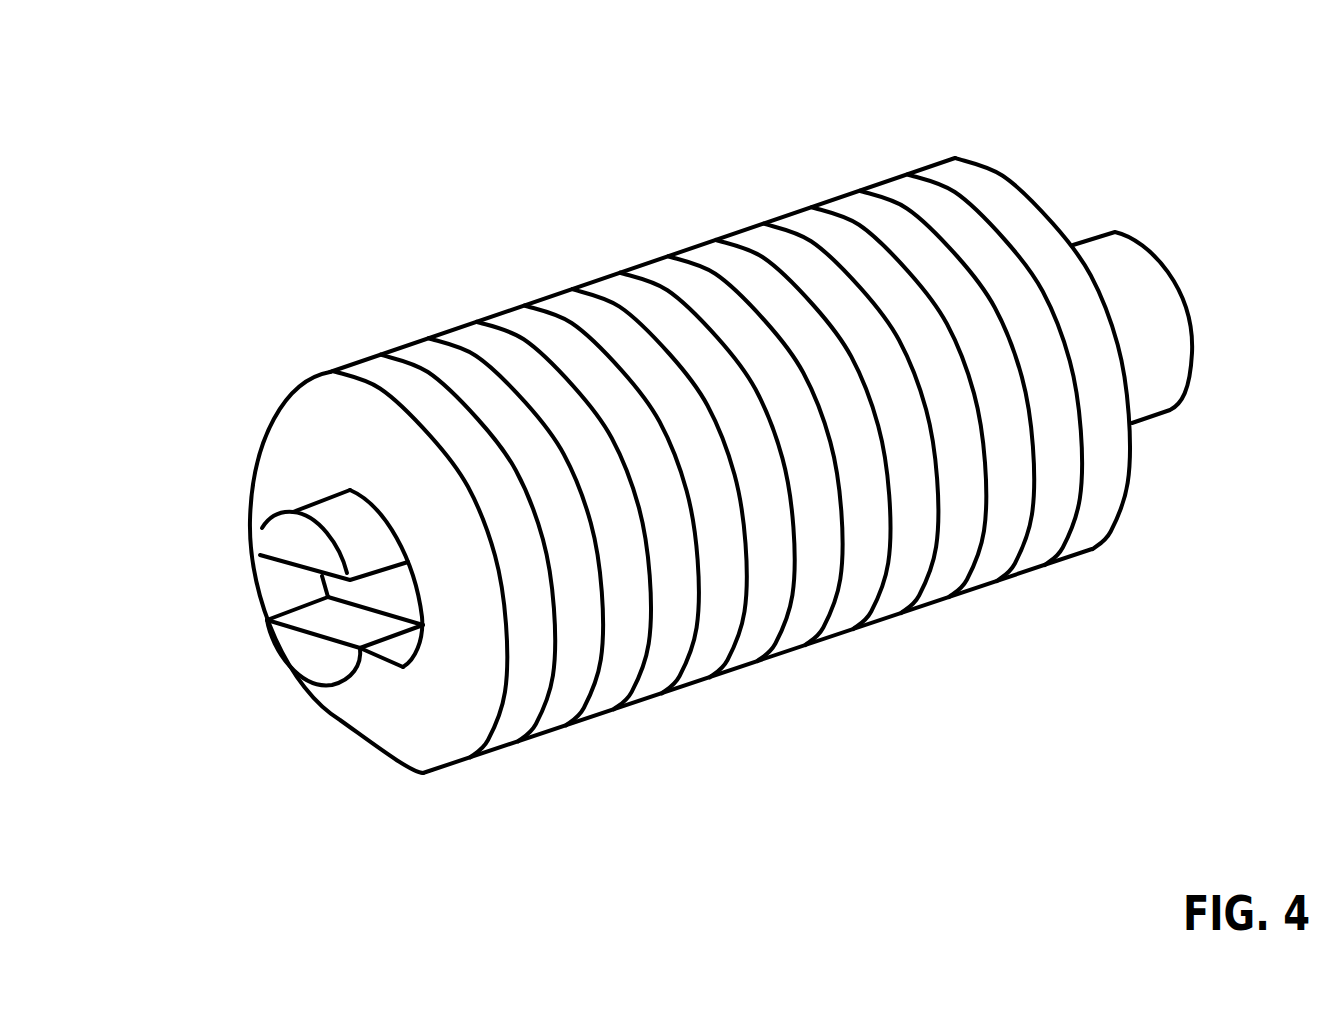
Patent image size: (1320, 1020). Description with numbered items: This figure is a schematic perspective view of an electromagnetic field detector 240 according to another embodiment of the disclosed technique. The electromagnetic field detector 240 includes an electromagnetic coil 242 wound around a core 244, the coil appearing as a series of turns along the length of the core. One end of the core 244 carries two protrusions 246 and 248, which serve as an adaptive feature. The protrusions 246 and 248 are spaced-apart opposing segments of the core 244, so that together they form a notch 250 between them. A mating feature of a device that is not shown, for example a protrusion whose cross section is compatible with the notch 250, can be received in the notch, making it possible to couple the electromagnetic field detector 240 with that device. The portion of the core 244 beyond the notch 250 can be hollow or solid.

The electromagnetic field detector 240 is at (682, 458).
The electromagnetic coil 242 is at (940, 160).
The core 244 is at (1114, 232).
The protrusion 246 is at (327, 493).
The protrusion 248 is at (381, 672).
The notch 250 is at (282, 588).